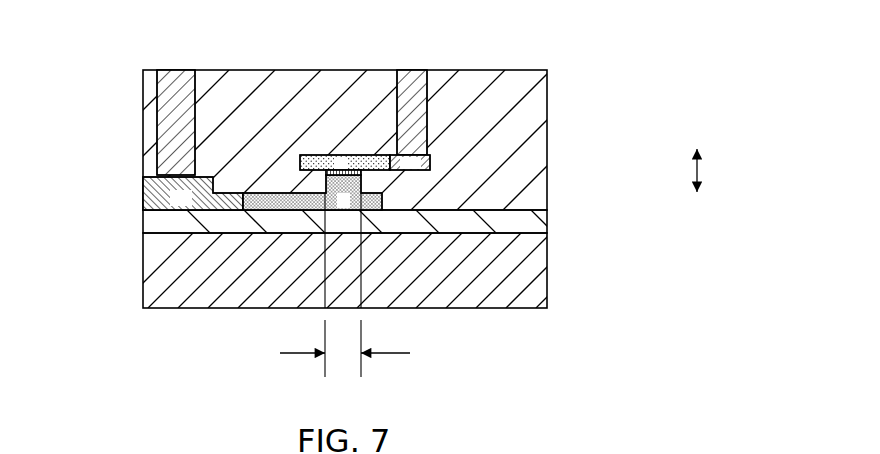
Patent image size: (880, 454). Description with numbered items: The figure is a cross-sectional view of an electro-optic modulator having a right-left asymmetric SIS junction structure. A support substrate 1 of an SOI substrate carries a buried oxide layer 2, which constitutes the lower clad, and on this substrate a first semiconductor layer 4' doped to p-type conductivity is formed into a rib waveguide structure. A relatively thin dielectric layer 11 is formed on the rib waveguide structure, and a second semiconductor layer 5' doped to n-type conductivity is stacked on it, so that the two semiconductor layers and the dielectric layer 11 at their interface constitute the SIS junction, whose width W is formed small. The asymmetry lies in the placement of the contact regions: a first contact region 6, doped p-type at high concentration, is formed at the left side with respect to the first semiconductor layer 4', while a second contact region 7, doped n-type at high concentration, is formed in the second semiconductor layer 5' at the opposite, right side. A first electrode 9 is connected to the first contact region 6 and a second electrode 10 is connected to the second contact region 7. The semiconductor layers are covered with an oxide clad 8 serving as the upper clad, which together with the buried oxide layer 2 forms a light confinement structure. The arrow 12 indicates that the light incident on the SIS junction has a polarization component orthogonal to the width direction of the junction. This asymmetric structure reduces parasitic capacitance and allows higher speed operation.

The support substrate 1 is at (537, 288).
The buried oxide (BOX) layer 2 is at (530, 228).
The first semiconductor layer 4' is at (238, 164).
The second semiconductor layer 5' is at (345, 100).
The first contact region 6 is at (168, 197).
The second contact region 7 is at (432, 164).
The oxide clad 8 is at (462, 145).
The first electrode 9 is at (175, 82).
The second electrode 10 is at (417, 97).
The dielectric layer 11 is at (362, 174).
The arrow indicating polarization direction 12 is at (700, 172).
The width of the SIS junction W is at (345, 288).